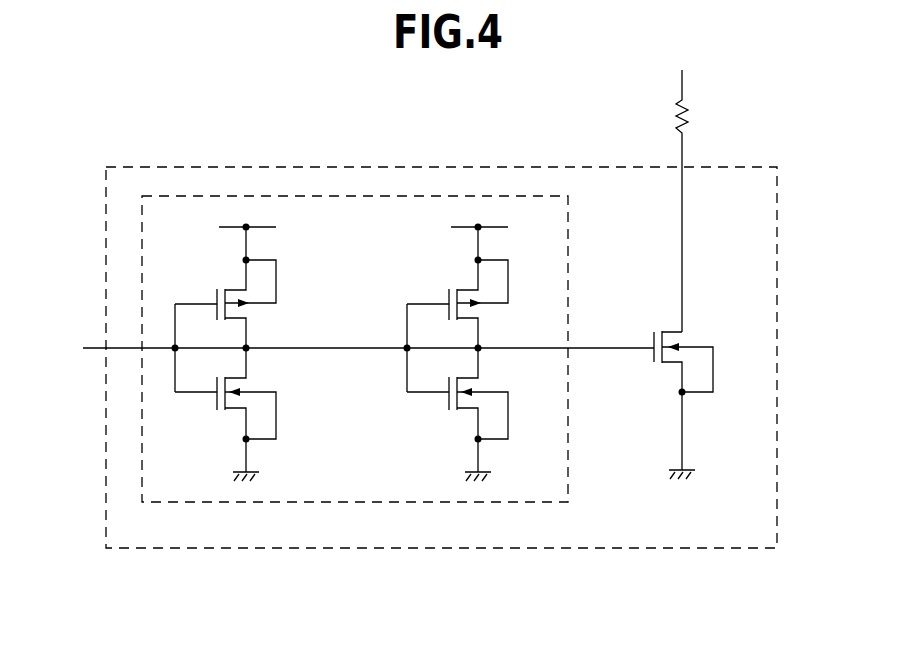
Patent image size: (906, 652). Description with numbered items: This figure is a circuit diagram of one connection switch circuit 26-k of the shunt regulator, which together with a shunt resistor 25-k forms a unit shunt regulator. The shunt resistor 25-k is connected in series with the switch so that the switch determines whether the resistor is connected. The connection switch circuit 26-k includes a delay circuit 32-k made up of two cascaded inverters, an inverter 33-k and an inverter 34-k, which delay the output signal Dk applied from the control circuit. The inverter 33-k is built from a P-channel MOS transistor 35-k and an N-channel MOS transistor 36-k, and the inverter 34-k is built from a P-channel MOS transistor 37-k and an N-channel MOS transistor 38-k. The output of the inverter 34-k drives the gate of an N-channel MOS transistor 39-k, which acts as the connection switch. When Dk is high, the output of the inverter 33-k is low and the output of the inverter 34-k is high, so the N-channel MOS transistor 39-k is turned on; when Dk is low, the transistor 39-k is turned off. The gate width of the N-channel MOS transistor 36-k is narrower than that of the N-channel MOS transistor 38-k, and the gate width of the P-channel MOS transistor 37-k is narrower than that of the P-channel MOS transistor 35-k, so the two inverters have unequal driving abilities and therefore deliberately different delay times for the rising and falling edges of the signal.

The shunt resistor 25-k is at (695, 118).
The connection switch circuit 26-k is at (289, 168).
The delay circuit 32-k is at (298, 502).
The inverter 33-k is at (224, 353).
The inverter 34-k is at (456, 353).
The P-channel MOS transistor 35-k is at (216, 297).
The N-channel MOS transistor 36-k is at (215, 404).
The P-channel MOS transistor 37-k is at (449, 298).
The N-channel MOS transistor 38-k is at (448, 406).
The N-channel MOS transistor 39-k is at (654, 358).